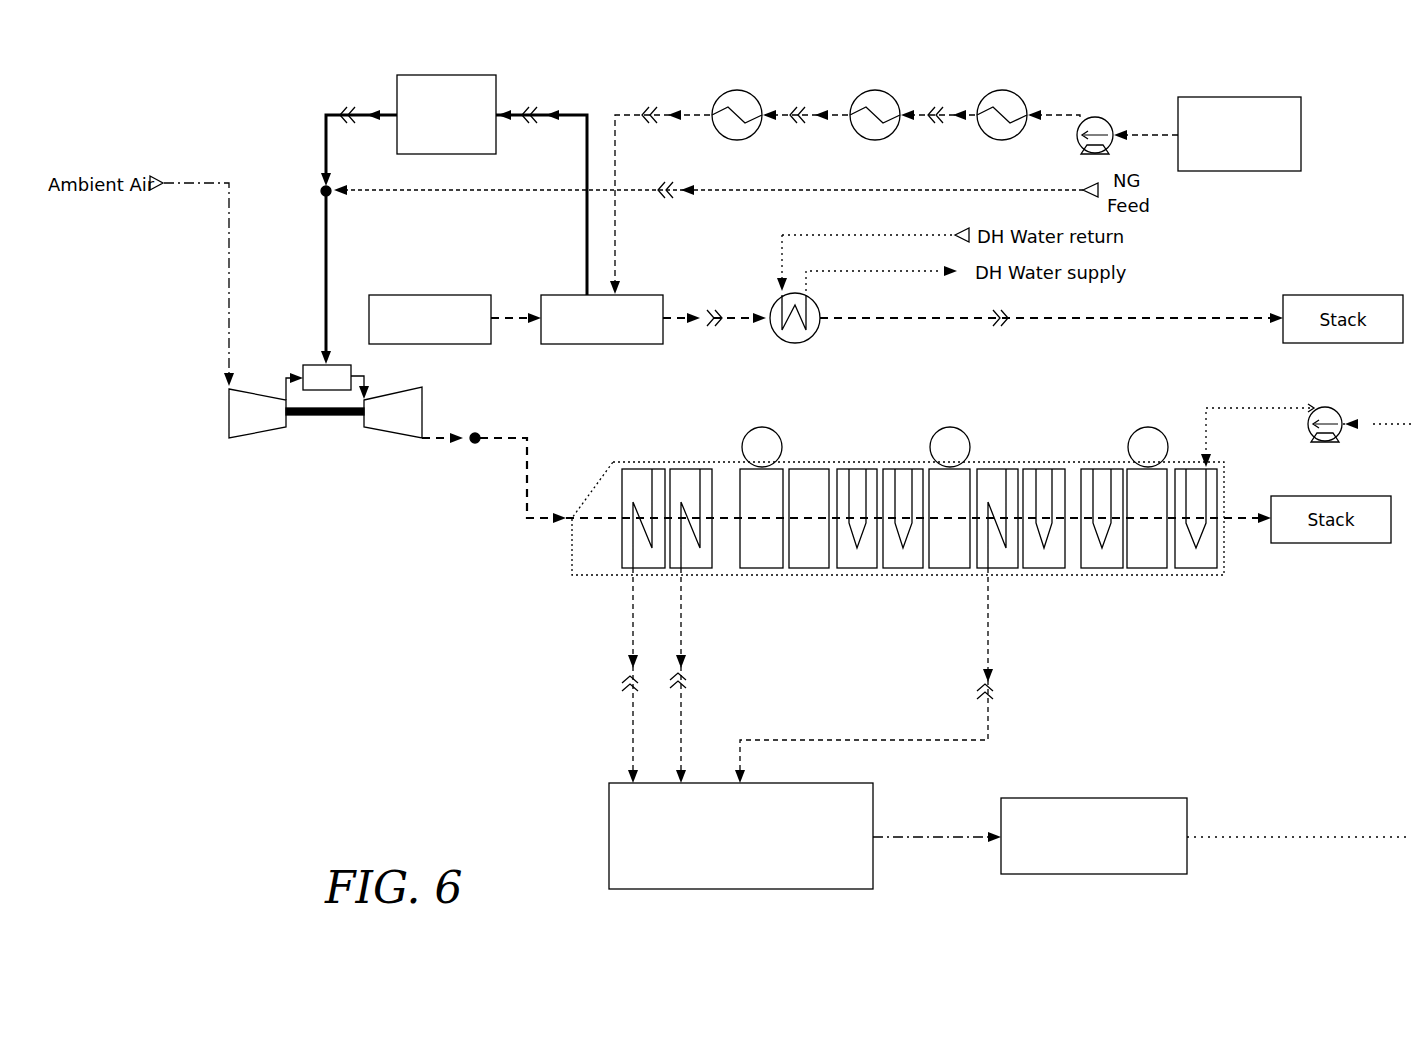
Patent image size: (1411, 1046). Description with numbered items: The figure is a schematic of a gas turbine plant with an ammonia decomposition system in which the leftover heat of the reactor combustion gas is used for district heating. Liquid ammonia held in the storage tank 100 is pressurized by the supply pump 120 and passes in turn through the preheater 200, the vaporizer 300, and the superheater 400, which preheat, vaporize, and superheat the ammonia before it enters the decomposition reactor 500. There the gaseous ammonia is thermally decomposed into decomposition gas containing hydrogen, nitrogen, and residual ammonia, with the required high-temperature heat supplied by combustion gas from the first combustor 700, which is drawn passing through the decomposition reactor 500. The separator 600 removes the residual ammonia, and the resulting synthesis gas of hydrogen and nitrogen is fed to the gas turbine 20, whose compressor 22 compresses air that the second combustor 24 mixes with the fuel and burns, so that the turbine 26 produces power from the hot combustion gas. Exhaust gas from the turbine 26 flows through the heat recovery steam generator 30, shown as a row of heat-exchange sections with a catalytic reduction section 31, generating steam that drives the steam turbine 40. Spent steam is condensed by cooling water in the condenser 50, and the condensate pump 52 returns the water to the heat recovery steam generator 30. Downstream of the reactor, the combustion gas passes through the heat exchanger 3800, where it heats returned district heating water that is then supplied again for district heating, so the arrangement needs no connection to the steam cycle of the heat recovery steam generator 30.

The gas turbine 20 is at (250, 484).
The compressor 22 is at (259, 418).
The second combustor 24 is at (321, 380).
The turbine 26 is at (389, 418).
The heat recovery steam generator 30 is at (1113, 592).
The selective catalytic reduction unit 31 is at (813, 469).
The steam turbine 40 is at (609, 836).
The condenser 50 is at (1096, 798).
The condensate pump 52 is at (1325, 407).
The storage tank 100 is at (1237, 97).
The supply pump 120 is at (1095, 117).
The preheater 200 is at (1003, 90).
The vaporizer 300 is at (875, 90).
The superheater 400 is at (737, 90).
The decomposition reactor 500 is at (600, 344).
The separator 600 is at (440, 75).
The first combustor 700 is at (432, 295).
The heat exchanger 3800 is at (812, 338).